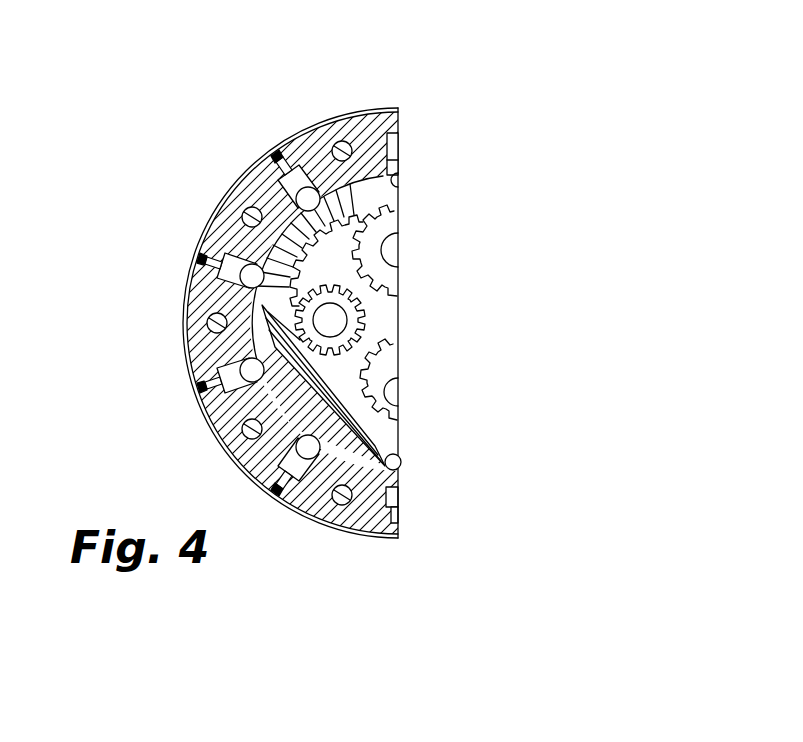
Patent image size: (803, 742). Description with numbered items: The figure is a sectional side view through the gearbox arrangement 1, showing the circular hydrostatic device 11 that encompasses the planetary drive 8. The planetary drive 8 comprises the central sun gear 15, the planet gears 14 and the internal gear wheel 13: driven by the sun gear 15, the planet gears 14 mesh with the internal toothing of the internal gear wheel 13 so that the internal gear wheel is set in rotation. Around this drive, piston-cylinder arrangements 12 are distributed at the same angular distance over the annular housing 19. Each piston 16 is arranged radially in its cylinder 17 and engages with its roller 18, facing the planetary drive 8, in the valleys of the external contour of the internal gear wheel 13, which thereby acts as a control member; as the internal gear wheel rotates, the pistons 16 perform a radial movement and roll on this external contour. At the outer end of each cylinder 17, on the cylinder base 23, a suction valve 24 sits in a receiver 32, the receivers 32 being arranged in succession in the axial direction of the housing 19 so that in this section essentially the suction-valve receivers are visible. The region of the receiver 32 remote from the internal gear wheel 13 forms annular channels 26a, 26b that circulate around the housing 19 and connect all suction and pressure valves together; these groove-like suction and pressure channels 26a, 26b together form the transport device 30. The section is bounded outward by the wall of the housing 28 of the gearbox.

The gearbox arrangement 1 is at (472, 224).
The planetary drive 8 is at (452, 156).
The hydrostatic device 11 is at (484, 401).
The piston-cylinder arrangement 12 is at (180, 393).
The internal gear wheel 13 is at (272, 300).
The planet gear 14 is at (378, 388).
The sun gear 15 is at (380, 318).
The piston 16 is at (303, 166).
The cylinder 17 is at (297, 192).
The roller 18 is at (405, 187).
The housing 19 is at (385, 522).
The cylinder base 23 is at (300, 478).
The suction valve 24 is at (202, 250).
The suction channel 26a is at (275, 147).
The pressure channel 26b is at (283, 152).
The housing of a gearbox 28 is at (376, 108).
The transport device 30 is at (135, 354).
The receiver 32 is at (277, 477).